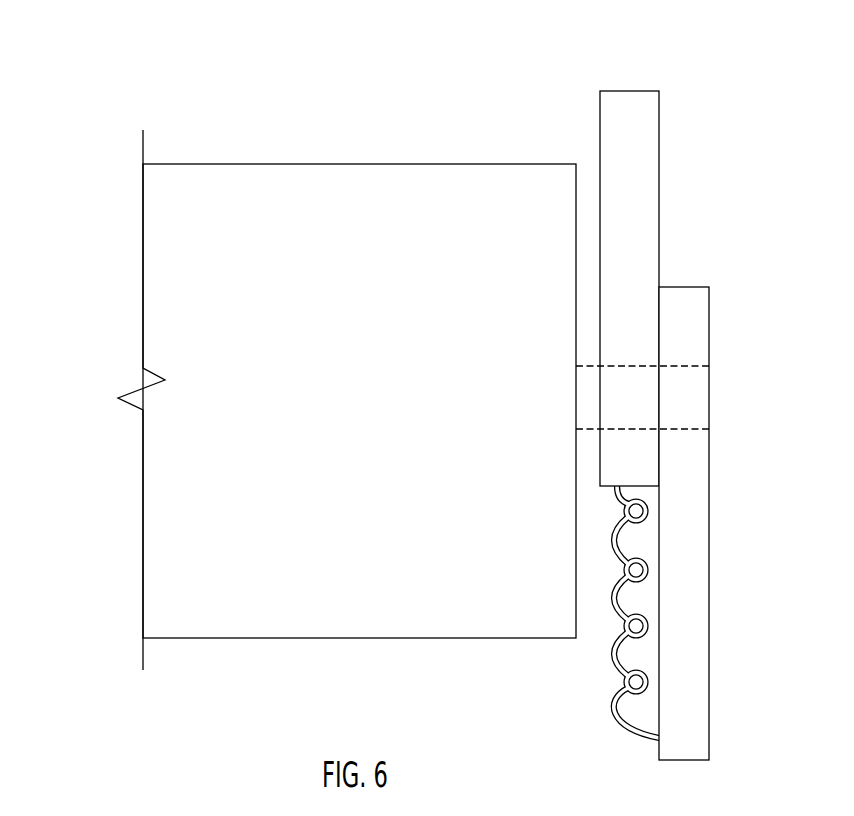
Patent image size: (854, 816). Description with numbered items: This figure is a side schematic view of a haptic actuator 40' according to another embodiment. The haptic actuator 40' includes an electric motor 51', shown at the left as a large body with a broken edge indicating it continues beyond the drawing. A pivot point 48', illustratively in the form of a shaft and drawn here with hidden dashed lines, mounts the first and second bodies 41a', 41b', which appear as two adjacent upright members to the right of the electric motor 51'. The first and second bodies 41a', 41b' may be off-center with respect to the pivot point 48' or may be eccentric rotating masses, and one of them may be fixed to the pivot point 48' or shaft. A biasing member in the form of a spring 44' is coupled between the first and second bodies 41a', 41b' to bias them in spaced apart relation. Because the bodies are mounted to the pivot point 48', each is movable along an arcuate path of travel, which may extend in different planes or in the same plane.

The haptic actuator 40' is at (359, 328).
The first body 41a' is at (729, 523).
The second body 41b' is at (590, 255).
The spring 44' is at (578, 616).
The pivot point 48' is at (684, 445).
The electric motor 51' is at (105, 400).